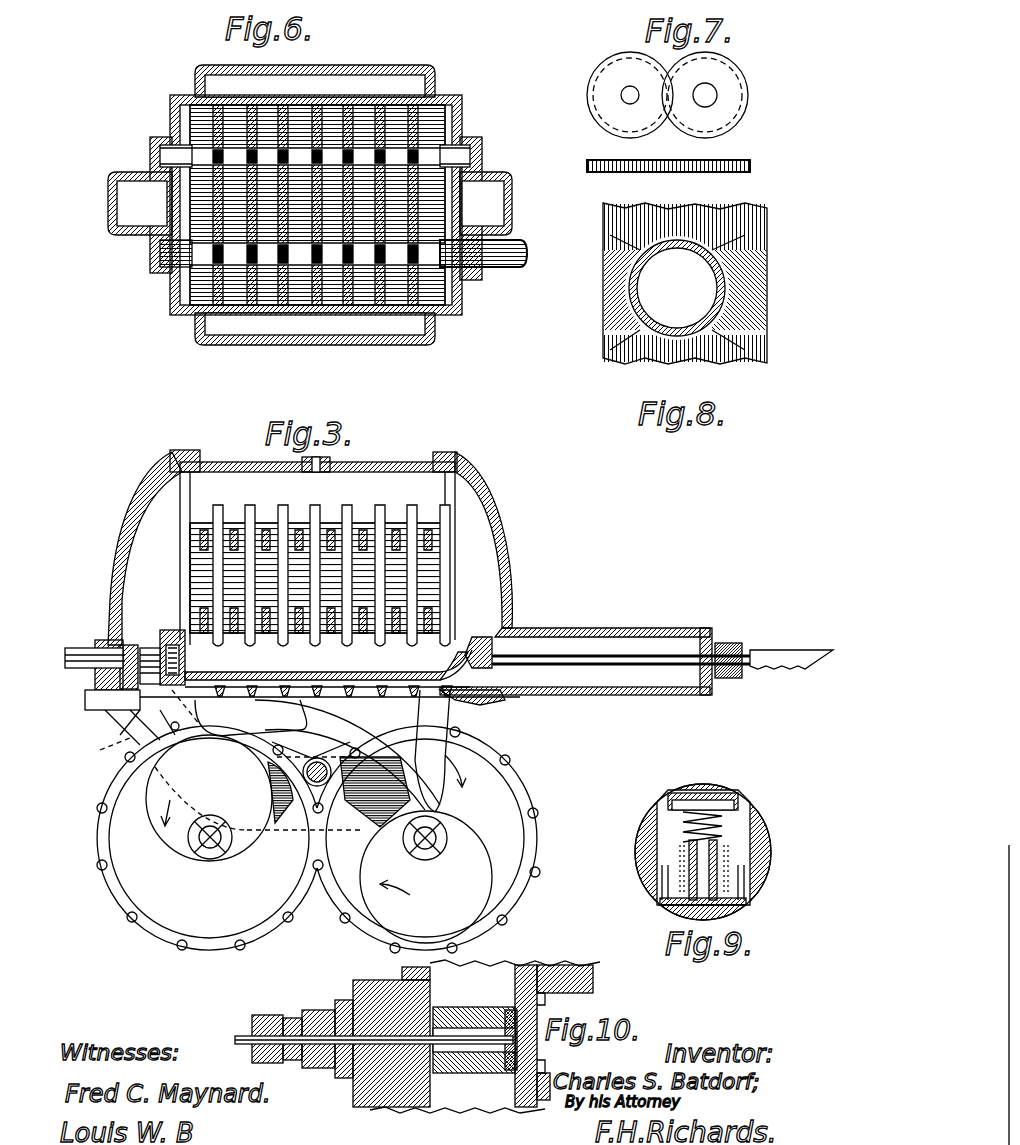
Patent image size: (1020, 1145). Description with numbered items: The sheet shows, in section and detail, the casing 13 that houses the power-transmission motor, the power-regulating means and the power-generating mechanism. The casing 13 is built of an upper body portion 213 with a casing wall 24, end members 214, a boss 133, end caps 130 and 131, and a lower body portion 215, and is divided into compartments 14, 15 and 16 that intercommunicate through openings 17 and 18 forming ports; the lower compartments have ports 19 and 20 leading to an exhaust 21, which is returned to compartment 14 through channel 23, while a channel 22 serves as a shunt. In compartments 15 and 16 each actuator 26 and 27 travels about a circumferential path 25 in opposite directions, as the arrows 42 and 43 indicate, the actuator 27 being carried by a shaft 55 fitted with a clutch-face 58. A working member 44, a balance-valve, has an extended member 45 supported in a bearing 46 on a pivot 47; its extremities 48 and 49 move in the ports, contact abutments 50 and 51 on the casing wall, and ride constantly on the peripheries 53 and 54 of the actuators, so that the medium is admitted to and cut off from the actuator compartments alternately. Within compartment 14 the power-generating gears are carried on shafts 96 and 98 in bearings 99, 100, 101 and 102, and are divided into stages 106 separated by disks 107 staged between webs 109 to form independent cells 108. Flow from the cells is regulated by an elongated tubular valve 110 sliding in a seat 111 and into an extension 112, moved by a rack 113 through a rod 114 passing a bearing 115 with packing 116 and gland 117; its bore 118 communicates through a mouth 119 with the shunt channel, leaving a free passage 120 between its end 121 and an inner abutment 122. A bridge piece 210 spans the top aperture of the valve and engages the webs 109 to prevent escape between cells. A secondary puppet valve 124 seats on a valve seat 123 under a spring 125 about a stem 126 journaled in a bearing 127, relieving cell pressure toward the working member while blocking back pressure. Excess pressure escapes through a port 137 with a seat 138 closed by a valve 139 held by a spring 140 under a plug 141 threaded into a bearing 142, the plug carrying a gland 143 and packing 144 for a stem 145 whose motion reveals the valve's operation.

In FIG. 6, the casing 13 is at (432, 90).
In FIG. 3, the casing 13 is at (462, 470).
In FIG. 10, the casing 13 is at (485, 1028).
In FIG. 3, the compartment 14 is at (330, 497).
In FIG. 3, the compartment 15 is at (209, 838).
In FIG. 3, the compartment 16 is at (425, 838).
In FIG. 3, the opening 17 is at (254, 729).
In FIG. 3, the opening 18 is at (426, 751).
In FIG. 3, the port 19 is at (272, 790).
In FIG. 3, the port 20 is at (360, 815).
In FIG. 3, the exhaust 21 is at (112, 735).
In FIG. 6, the channel 22 is at (486, 203).
In FIG. 3, the channel 22 is at (495, 545).
In FIG. 6, the channel 23 is at (140, 203).
In FIG. 3, the channel 23 is at (125, 528).
In FIG. 3, the casing wall 24 is at (200, 490).
In FIG. 3, the circumferential path 25 is at (160, 915).
In FIG. 3, the actuator 26 is at (209, 798).
In FIG. 3, the actuator 27 is at (426, 877).
In FIG. 3, the arrow 42 is at (253, 793).
In FIG. 3, the arrow 43 is at (395, 896).
In FIG. 3, the working member 44 is at (347, 755).
In FIG. 3, the extended member 45 is at (330, 760).
In FIG. 3, the bearing 46 is at (317, 764).
In FIG. 3, the pivot 47 is at (312, 752).
In FIG. 3, the extremity 48 is at (251, 718).
In FIG. 3, the extremity 49 is at (456, 779).
In FIG. 3, the abutment 50 is at (184, 710).
In FIG. 3, the abutment 51 is at (430, 715).
In FIG. 3, the periphery 53 is at (190, 848).
In FIG. 3, the periphery 54 is at (488, 858).
In FIG. 3, the shaft 55 is at (405, 850).
In FIG. 3, the clutch-face 58 is at (440, 850).
In FIG. 6, the shaft 96 is at (520, 248).
In FIG. 6, the shaft 98 is at (160, 160).
In FIG. 6, the bearing 99 is at (170, 135).
In FIG. 6, the bearing 100 is at (470, 135).
In FIG. 6, the bearing 101 is at (160, 260).
In FIG. 6, the bearing 102 is at (474, 272).
In FIG. 6, the stage 106 is at (270, 322).
In FIG. 3, the stage 106 is at (382, 525).
In FIG. 6, the disk 107 is at (350, 322).
In FIG. 7, the disk 107 is at (693, 128).
In FIG. 3, the disk 107 is at (205, 580).
In FIG. 6, the cell 108 is at (365, 120).
In FIG. 3, the cell 108 is at (428, 510).
In FIG. 8, the web 109 is at (712, 215).
In FIG. 3, the web 109 is at (250, 505).
In FIG. 8, the tubular valve 110 is at (724, 280).
In FIG. 3, the tubular valve 110 is at (302, 672).
In FIG. 9, the tubular valve 110 is at (663, 805).
In FIG. 8, the seat 111 is at (630, 300).
In FIG. 3, the extension 112 is at (613, 628).
In FIG. 3, the rack 113 is at (790, 650).
In FIG. 3, the rod 114 is at (660, 655).
In FIG. 3, the bearing 115 is at (725, 643).
In FIG. 3, the packing 116 is at (725, 680).
In FIG. 3, the gland 117 is at (740, 670).
In FIG. 8, the bore 118 is at (675, 264).
In FIG. 3, the bore 118 is at (430, 670).
In FIG. 3, the mouth 119 is at (470, 635).
In FIG. 3, the free passage 120 is at (495, 698).
In FIG. 3, the end 121 is at (520, 630).
In FIG. 3, the inner abutment 122 is at (475, 718).
In FIG. 9, the valve seat 123 is at (725, 820).
In FIG. 3, the puppet valve 124 is at (168, 628).
In FIG. 9, the puppet valve 124 is at (722, 800).
In FIG. 9, the spring 125 is at (745, 825).
In FIG. 9, the stem 126 is at (720, 855).
In FIG. 9, the bearing 127 is at (740, 900).
In FIG. 6, the cap 130 is at (395, 85).
In FIG. 6, the cap 131 is at (403, 325).
In FIG. 3, the boss 133 is at (332, 465).
In FIG. 10, the port 137 is at (540, 1070).
In FIG. 10, the seat 138 is at (548, 1000).
In FIG. 3, the valve 139 is at (143, 647).
In FIG. 10, the valve 139 is at (508, 1010).
In FIG. 10, the spring 140 is at (455, 1007).
In FIG. 3, the plug 141 is at (108, 648).
In FIG. 10, the plug 141 is at (355, 990).
In FIG. 10, the bearing 142 is at (381, 1129).
In FIG. 10, the gland 143 is at (268, 1015).
In FIG. 10, the packing 144 is at (300, 1060).
In FIG. 10, the stem 145 is at (330, 1060).
In FIG. 9, the bridge piece 210 is at (706, 792).
In FIG. 3, the upper body portion 213 is at (418, 460).
In FIG. 6, the end member 214 is at (482, 160).
In FIG. 3, the end member 214 is at (152, 492).
In FIG. 3, the lower body portion 215 is at (520, 722).